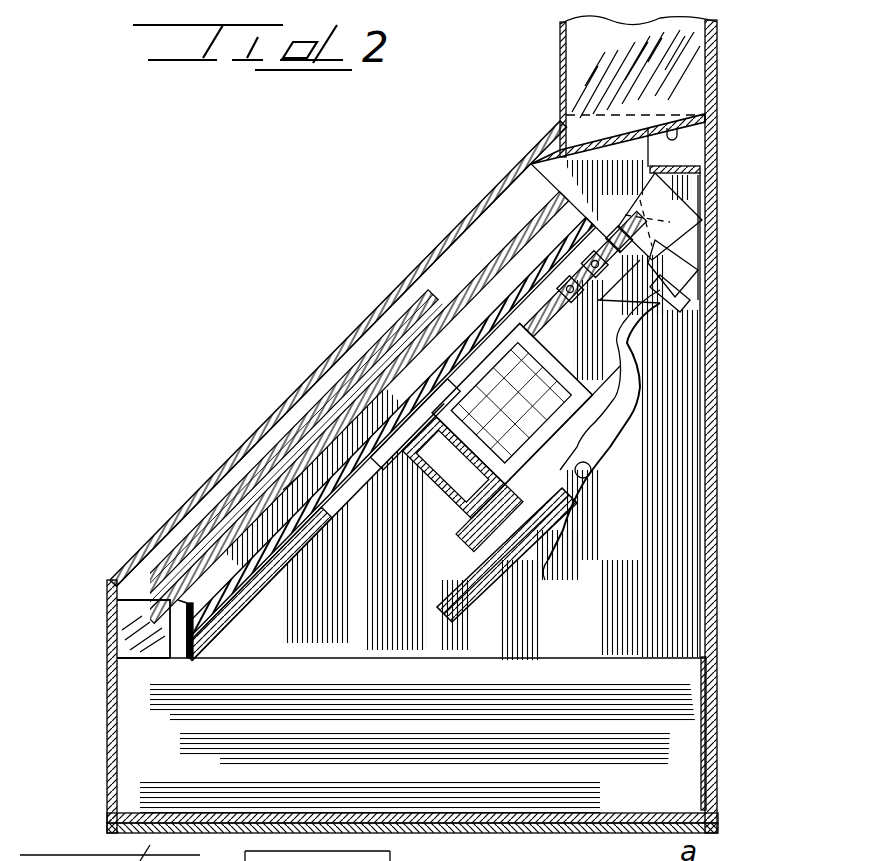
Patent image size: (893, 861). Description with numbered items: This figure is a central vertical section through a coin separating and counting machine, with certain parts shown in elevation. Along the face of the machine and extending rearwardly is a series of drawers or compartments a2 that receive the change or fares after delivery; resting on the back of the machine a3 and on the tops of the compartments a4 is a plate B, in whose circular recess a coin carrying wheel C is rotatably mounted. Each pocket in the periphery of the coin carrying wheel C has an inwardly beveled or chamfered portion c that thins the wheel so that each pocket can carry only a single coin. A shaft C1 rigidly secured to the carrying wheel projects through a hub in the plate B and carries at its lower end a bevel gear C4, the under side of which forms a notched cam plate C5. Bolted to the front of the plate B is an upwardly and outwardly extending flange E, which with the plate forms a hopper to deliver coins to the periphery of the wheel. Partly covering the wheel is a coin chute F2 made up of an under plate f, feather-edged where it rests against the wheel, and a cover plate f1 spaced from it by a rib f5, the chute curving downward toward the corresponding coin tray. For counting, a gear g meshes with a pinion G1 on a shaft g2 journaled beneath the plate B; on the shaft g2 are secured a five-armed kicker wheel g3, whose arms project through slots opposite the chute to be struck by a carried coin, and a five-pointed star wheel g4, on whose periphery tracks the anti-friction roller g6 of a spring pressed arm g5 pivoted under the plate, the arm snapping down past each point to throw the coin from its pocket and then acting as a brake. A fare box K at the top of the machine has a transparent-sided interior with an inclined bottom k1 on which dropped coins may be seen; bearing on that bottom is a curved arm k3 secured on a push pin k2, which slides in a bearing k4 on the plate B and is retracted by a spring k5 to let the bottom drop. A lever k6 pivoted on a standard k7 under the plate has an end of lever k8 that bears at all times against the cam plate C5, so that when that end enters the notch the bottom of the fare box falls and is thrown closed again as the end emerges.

The fare box K is at (692, 62).
The inclined bottom k1 is at (537, 162).
The push pin k2 is at (696, 266).
The curved arm k3 is at (652, 148).
The bearing k4 is at (668, 212).
The spring k5 is at (690, 236).
The lever k6 is at (627, 440).
The standard k7 is at (580, 437).
The end of lever k8 is at (560, 533).
The pinion G1 is at (729, 150).
The gear g is at (587, 212).
The shaft g2 is at (640, 312).
The kicker wheel g3 is at (575, 257).
The star wheel g4 is at (500, 450).
The spring pressed arm g5 is at (548, 456).
The anti-friction roller g6 is at (500, 462).
The flange E is at (440, 265).
The under plate f is at (393, 405).
The cover plate f1 is at (455, 300).
The rib f5 is at (410, 330).
The shaft C1 is at (335, 470).
The coin chute F2 is at (345, 520).
The chamfered portion c is at (235, 610).
The coin carrying wheel C is at (300, 515).
The plate B is at (298, 620).
The bevel gear C4 is at (466, 582).
The cam plate C5 is at (494, 597).
The drawers a2 is at (107, 762).
The back of the machine a3 is at (710, 328).
The tops of the compartments a4 is at (200, 663).